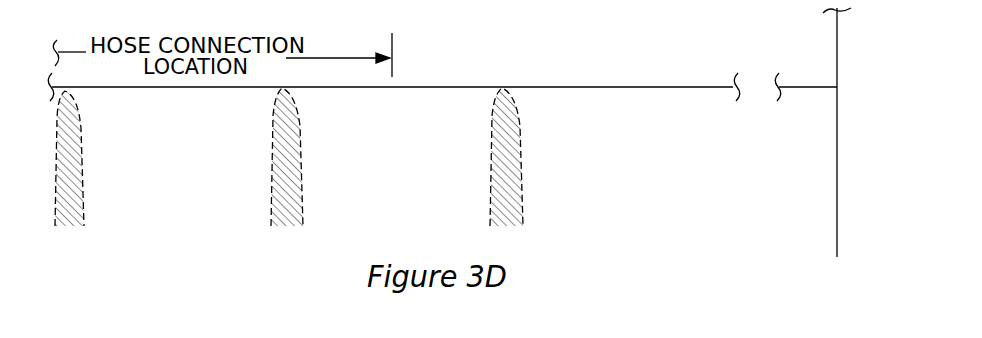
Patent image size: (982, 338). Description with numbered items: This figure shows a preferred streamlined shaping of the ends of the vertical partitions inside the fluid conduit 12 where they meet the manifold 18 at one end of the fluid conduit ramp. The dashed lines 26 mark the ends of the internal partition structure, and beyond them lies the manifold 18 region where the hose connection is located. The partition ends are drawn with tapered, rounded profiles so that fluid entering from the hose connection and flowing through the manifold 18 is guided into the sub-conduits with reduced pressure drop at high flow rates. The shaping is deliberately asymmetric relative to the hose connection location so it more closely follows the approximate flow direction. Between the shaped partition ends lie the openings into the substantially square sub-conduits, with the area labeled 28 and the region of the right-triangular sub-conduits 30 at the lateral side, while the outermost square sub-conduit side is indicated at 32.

The fluid conduit 12 is at (838, 148).
The manifold 18 is at (839, 41).
The dashed lines 26 is at (670, 87).
The spacing between projections 28 is at (292, 153).
The right-triangular sub-conduits 30 is at (649, 153).
The side of outermost substantially square sub-conduit 32 is at (300, 137).